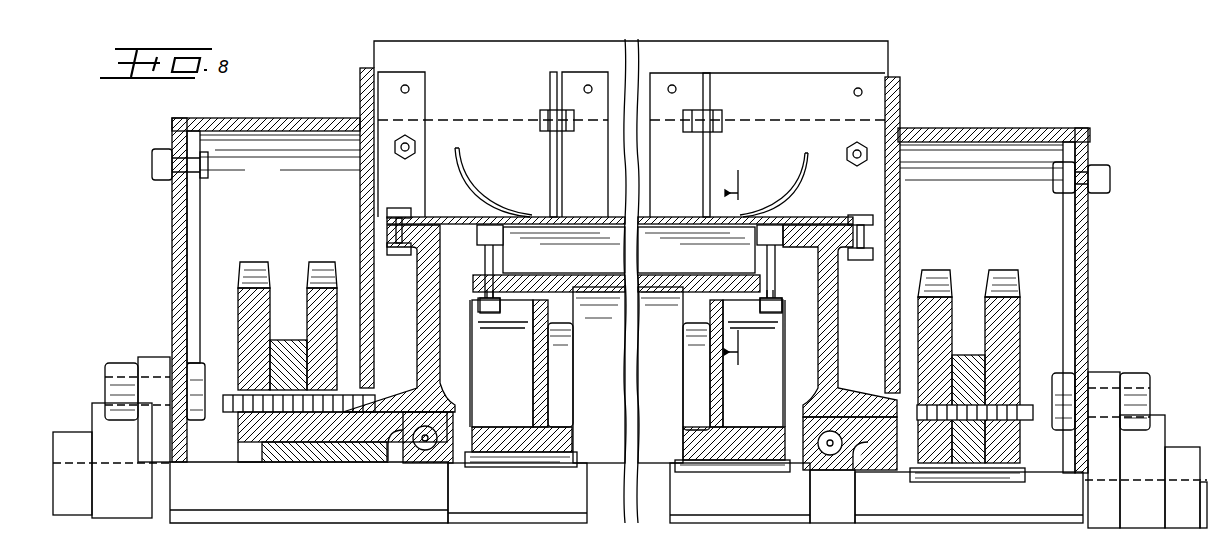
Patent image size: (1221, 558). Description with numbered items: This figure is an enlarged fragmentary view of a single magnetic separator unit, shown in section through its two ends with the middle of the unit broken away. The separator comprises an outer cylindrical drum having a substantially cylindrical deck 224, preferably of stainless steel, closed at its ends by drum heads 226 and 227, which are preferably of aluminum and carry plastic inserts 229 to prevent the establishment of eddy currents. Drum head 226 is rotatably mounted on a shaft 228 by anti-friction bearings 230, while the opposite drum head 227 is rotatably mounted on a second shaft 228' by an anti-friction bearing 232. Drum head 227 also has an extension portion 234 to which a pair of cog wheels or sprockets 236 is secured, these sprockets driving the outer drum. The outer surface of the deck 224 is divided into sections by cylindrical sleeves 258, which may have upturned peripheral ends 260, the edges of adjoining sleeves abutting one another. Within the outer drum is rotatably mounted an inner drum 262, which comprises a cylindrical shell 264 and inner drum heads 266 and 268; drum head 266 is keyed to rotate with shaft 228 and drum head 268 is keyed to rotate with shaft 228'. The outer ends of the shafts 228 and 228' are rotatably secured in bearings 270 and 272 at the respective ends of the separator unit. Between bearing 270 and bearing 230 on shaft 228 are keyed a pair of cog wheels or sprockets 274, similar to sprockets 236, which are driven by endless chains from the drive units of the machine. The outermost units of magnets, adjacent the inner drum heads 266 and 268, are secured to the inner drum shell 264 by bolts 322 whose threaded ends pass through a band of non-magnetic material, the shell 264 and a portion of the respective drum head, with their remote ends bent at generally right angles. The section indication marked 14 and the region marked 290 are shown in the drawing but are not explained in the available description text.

The section line 14 is at (747, 253).
The cylindrical deck 224 is at (831, 225).
The drum head 226 is at (838, 310).
The drum head 227 is at (418, 262).
The shaft 228 is at (876, 508).
The shaft 228' is at (378, 510).
The plastic inserts 229 is at (415, 222).
The anti-friction bearings 230 is at (843, 456).
The anti-friction bearing 232 is at (412, 452).
The extension portion 234 is at (245, 453).
The sprockets 236 is at (308, 270).
The cylindrical sleeves 258 is at (527, 207).
The upturned peripheral ends 260 is at (467, 173).
The inner drum 262 is at (613, 388).
The cylindrical shell 264 is at (592, 290).
The drum head 266 is at (720, 402).
The drum head 268 is at (535, 381).
The bearing 270 is at (1168, 430).
The bearing 272 is at (96, 418).
The sprockets 274 is at (1000, 280).
The housing box 290 is at (580, 232).
The bolts 322 is at (486, 268).